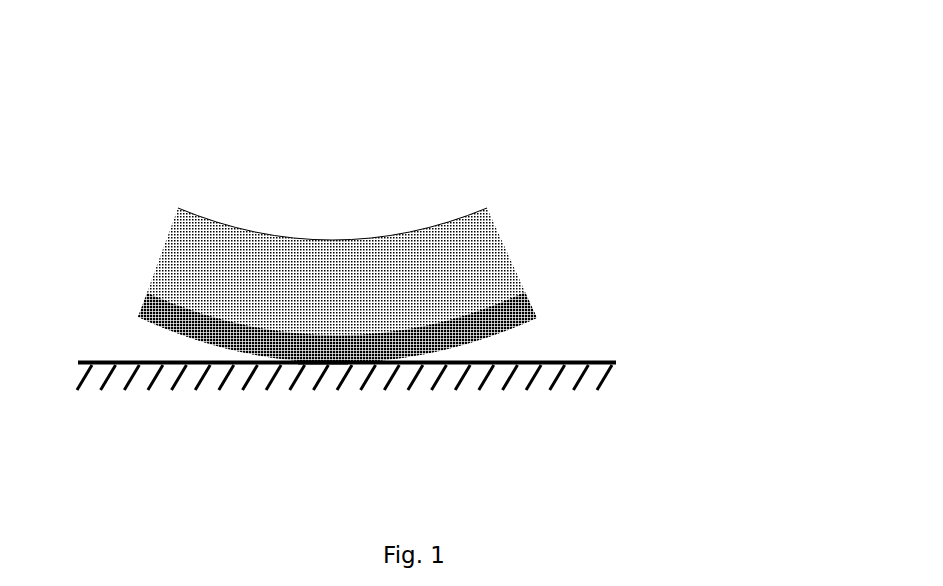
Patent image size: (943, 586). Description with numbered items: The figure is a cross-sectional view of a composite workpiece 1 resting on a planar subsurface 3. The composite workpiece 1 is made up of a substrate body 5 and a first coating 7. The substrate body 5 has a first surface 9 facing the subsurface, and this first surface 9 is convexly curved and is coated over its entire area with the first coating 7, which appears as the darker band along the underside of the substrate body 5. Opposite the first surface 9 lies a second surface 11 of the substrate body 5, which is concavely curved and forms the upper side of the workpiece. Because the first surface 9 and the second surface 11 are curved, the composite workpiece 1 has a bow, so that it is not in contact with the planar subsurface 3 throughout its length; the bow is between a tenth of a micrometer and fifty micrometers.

The composite workpiece 1 is at (398, 244).
The planar subsurface 3 is at (658, 367).
The substrate body 5 is at (353, 263).
The first coating 7 is at (508, 310).
The first surface 9 is at (317, 352).
The second surface 11 is at (312, 200).